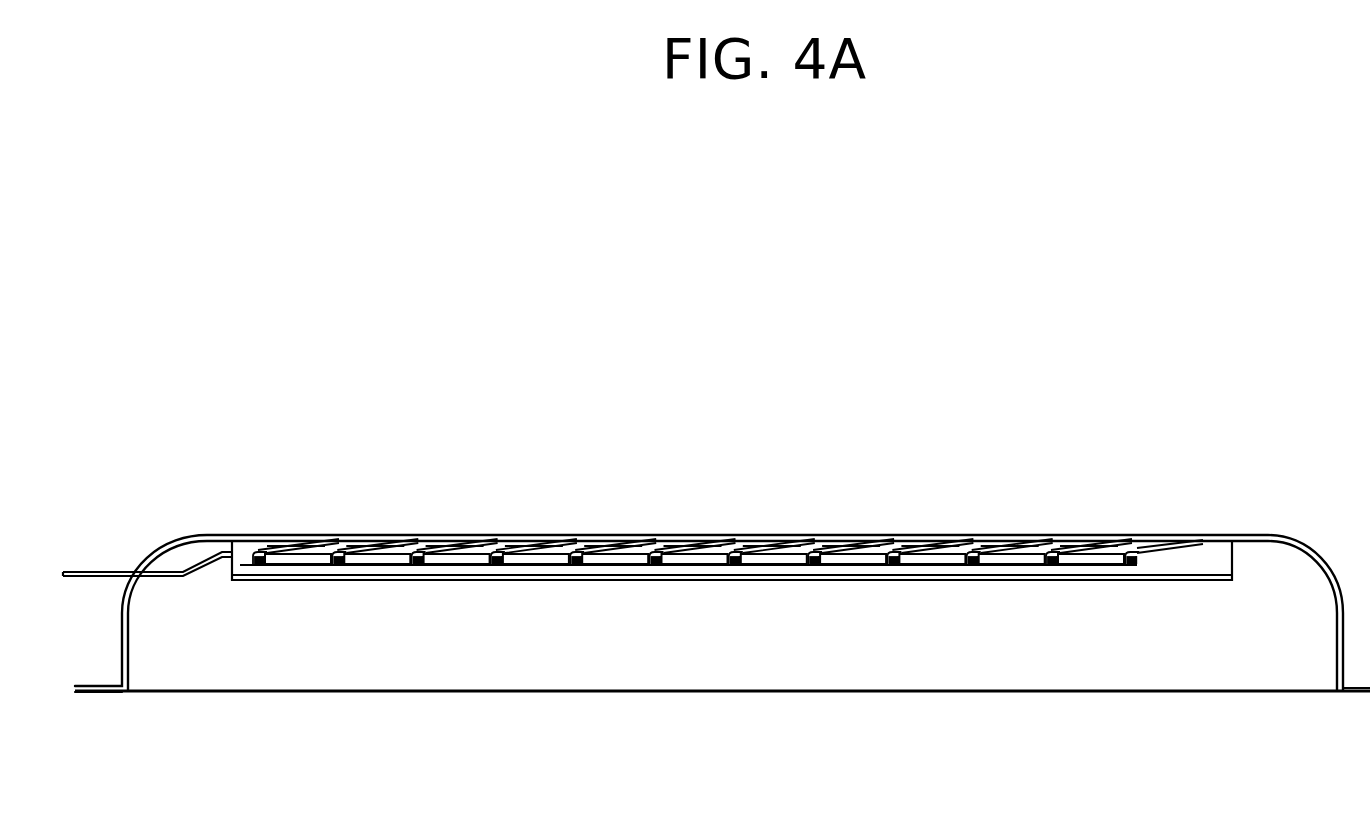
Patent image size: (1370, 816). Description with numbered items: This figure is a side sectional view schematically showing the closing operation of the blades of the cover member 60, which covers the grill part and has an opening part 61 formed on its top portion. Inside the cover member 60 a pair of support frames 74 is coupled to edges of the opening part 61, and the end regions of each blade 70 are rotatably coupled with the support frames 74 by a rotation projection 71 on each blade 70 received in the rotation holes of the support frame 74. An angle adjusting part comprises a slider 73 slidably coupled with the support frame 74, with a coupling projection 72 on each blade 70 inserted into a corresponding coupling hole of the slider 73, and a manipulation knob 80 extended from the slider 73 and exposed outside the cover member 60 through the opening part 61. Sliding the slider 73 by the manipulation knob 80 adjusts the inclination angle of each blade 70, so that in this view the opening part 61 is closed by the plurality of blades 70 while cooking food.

The cover member 60 is at (1300, 540).
The opening part 61 is at (130, 573).
The blade 70 is at (328, 540).
The rotation projection 71 is at (270, 540).
The coupling projection 72 is at (248, 557).
The slider 73 is at (390, 560).
The support frame 74 is at (1198, 578).
The manipulation knob 80 is at (65, 572).